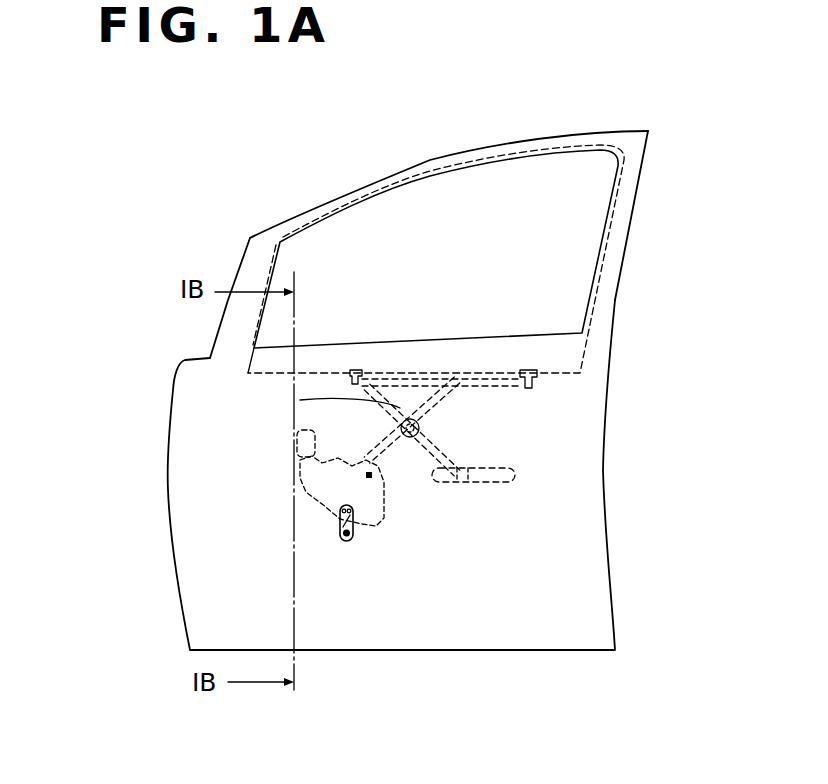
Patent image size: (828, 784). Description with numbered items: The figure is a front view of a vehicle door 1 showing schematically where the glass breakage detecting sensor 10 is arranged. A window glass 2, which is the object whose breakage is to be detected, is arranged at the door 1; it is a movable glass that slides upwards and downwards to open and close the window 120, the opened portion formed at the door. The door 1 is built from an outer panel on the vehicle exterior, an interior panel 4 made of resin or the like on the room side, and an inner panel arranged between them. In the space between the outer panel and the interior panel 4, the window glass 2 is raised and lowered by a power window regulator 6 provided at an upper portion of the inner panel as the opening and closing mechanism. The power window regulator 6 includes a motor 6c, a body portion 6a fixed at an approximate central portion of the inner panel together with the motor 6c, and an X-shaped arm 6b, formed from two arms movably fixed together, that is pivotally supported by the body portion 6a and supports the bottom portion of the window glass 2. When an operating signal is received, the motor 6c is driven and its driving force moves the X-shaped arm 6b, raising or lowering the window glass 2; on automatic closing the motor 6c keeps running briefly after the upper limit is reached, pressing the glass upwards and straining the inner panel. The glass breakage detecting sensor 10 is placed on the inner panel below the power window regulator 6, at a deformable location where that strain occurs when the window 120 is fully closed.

The vehicle door 1 is at (330, 189).
The window glass 2 is at (432, 208).
The interior panel 4 is at (597, 533).
The window 120 is at (497, 336).
The power window regulator 6 is at (72, 390).
The body portion 6a is at (303, 477).
The X-shaped arm 6b is at (300, 400).
The motor 6c is at (297, 438).
The glass breakage detecting sensor 10 is at (347, 558).